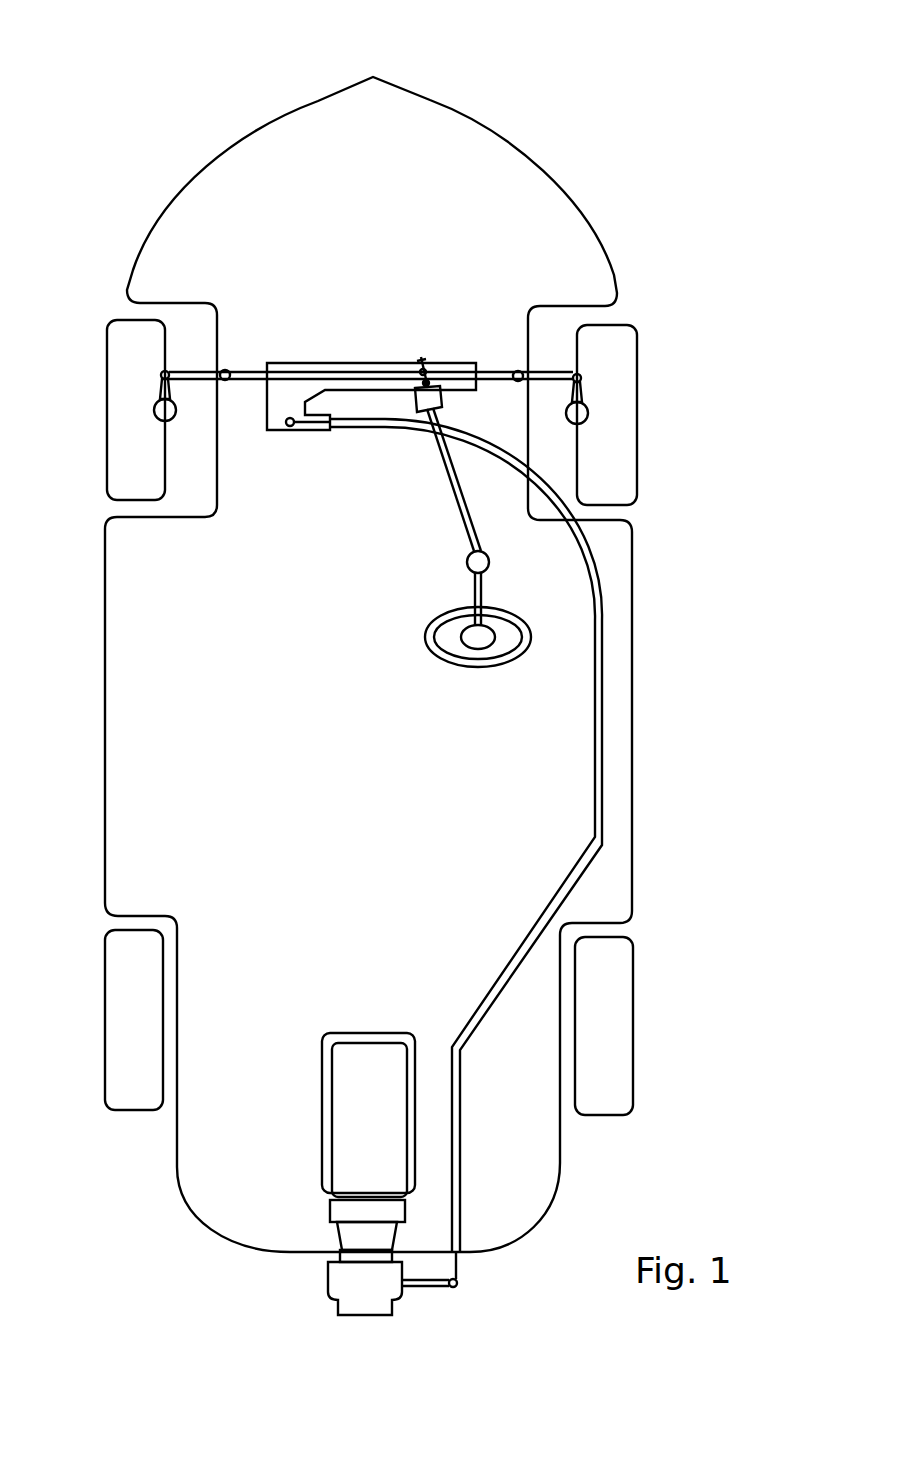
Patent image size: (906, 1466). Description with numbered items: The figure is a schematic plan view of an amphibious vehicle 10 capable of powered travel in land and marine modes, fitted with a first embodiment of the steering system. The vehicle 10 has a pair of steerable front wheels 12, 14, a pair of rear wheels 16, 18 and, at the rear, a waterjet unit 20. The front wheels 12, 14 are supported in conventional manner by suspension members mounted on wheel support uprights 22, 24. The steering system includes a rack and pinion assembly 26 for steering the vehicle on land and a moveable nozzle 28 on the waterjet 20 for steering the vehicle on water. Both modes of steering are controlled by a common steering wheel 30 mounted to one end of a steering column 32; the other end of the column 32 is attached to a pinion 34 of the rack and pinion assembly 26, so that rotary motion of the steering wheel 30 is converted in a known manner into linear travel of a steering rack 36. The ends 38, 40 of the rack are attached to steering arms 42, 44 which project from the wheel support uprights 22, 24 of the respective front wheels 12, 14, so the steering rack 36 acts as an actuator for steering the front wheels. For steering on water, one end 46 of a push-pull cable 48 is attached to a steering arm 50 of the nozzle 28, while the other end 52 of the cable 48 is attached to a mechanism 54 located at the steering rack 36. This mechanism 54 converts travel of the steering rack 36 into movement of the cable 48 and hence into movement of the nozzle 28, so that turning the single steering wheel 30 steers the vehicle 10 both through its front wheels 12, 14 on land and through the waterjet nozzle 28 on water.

The amphibious vehicle 10 is at (118, 64).
The front wheel 12 is at (162, 334).
The front wheel 14 is at (608, 345).
The rear wheel 16 is at (137, 1060).
The rear wheel 18 is at (610, 1048).
The waterjet unit 20 is at (385, 1097).
The wheel support upright 22 is at (158, 414).
The wheel support upright 24 is at (584, 415).
The rack and pinion assembly 26 is at (387, 334).
The moveable nozzle 28 is at (357, 1288).
The steering wheel 30 is at (428, 635).
The steering column 32 is at (470, 533).
The pinion 34 is at (448, 398).
The steering rack 36 is at (290, 372).
The end of the rack 38 is at (193, 372).
The end of the rack 40 is at (553, 378).
The steering arm 42 is at (163, 371).
The steering arm 44 is at (582, 393).
The end of the push-pull cable 46 is at (456, 1264).
The push-pull cable 48 is at (383, 430).
The steering arm of the nozzle 50 is at (420, 1287).
The end of the cable 52 is at (303, 423).
The mechanism 54 is at (277, 413).